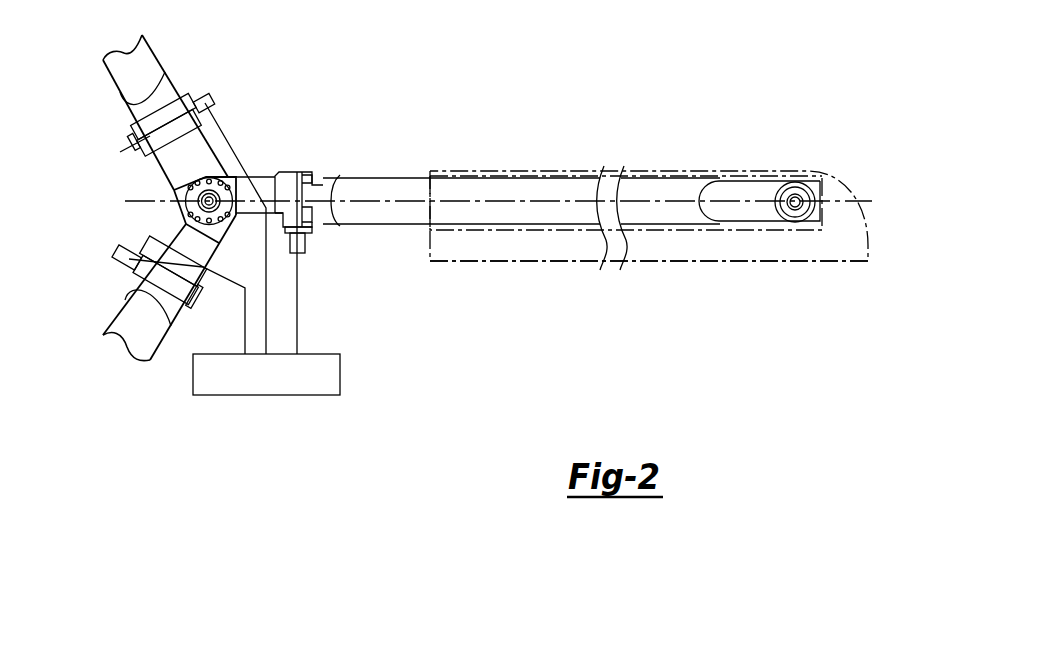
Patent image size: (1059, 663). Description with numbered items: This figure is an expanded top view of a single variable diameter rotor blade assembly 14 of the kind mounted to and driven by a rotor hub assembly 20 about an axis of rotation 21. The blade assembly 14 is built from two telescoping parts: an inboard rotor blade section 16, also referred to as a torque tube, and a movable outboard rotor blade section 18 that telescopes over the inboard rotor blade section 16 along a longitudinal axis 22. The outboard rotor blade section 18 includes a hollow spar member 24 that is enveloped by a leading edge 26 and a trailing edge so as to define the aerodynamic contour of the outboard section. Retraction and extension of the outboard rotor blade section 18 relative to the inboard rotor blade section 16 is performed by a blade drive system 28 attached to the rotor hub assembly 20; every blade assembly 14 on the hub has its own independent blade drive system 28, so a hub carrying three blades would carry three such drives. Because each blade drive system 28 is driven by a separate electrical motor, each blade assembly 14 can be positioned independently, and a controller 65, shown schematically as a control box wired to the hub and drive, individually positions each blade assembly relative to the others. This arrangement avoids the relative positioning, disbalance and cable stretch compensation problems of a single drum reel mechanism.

The VDR blade assembly 14 is at (550, 156).
The inboard rotor blade section 16 is at (384, 225).
The outboard rotor blade section 18 is at (527, 254).
The rotor hub assembly 20 is at (228, 175).
The axis of rotation 21 is at (136, 201).
The longitudinal axis 22 is at (404, 178).
The hollow spar member 24 is at (697, 231).
The leading edge 26 is at (718, 172).
The blade drive system 28 is at (300, 170).
The controller 65 is at (222, 395).